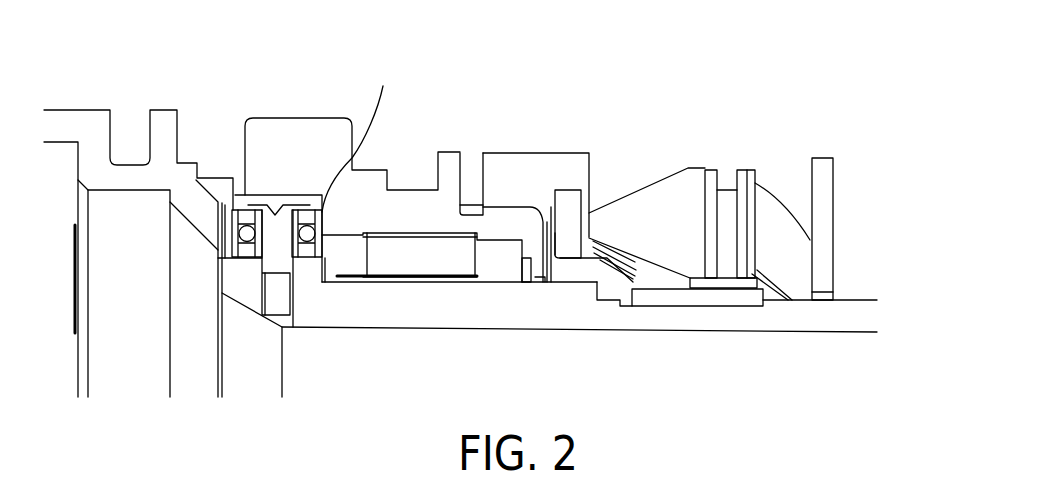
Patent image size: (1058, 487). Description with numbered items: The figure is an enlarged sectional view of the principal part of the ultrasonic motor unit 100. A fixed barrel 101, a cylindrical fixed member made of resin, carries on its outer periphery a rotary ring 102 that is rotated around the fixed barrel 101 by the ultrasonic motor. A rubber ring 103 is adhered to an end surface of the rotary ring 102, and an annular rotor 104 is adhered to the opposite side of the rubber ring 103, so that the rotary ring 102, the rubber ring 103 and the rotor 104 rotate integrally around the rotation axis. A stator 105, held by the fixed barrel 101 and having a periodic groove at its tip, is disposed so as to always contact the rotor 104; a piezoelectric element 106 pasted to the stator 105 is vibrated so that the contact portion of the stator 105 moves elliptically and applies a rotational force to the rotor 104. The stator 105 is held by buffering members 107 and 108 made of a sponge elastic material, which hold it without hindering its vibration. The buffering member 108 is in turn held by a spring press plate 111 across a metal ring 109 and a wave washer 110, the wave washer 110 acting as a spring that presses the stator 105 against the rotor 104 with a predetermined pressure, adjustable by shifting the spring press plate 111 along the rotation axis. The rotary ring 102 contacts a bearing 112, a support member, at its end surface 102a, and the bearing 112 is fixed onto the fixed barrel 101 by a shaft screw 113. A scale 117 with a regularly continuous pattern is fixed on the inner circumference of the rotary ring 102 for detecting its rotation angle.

The ultrasonic motor unit 100 is at (499, 210).
The fixed barrel 101 is at (782, 329).
The rotary ring 102 is at (332, 118).
The end surface 102a is at (371, 131).
The rubber ring 103 is at (473, 153).
The rotor 104 is at (565, 153).
The stator 105 is at (650, 186).
The piezoelectric element 106 is at (705, 170).
The buffering member 107 is at (727, 190).
The buffering member 108 is at (667, 290).
The metal ring 109 is at (747, 168).
The wave washer 110 is at (770, 197).
The spring press plate 111 is at (840, 200).
The bearing 112 is at (237, 192).
The shaft screw 113 is at (282, 200).
The scale 117 is at (407, 245).